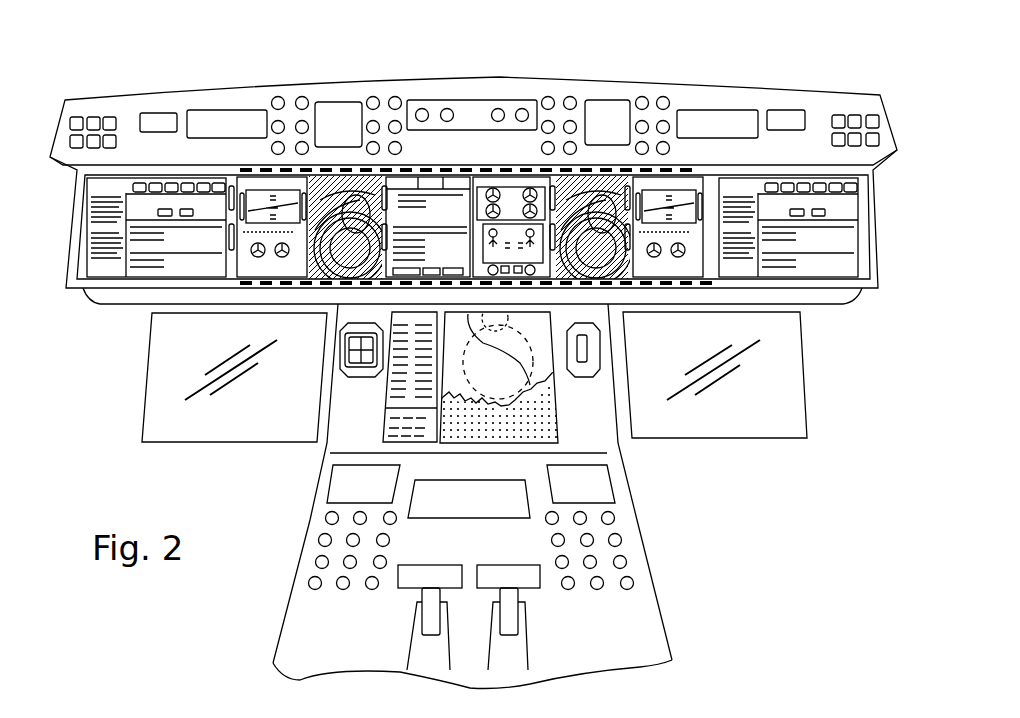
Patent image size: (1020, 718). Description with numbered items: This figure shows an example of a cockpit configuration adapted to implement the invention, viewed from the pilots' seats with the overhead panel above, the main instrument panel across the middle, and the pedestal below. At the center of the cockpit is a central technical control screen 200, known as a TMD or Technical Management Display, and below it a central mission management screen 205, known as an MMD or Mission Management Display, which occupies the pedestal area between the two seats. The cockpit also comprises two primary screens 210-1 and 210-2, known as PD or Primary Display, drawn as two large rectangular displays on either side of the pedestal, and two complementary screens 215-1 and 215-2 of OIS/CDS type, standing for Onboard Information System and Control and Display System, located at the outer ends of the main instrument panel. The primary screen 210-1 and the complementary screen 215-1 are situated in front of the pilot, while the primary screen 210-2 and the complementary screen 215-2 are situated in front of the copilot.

The central technical control screen 200 is at (437, 172).
The central mission management screen 205 is at (558, 426).
The primary screen 210-1 is at (207, 288).
The primary screen 210-2 is at (747, 283).
The complementary screen 215-1 is at (82, 289).
The complementary screen 215-2 is at (866, 288).